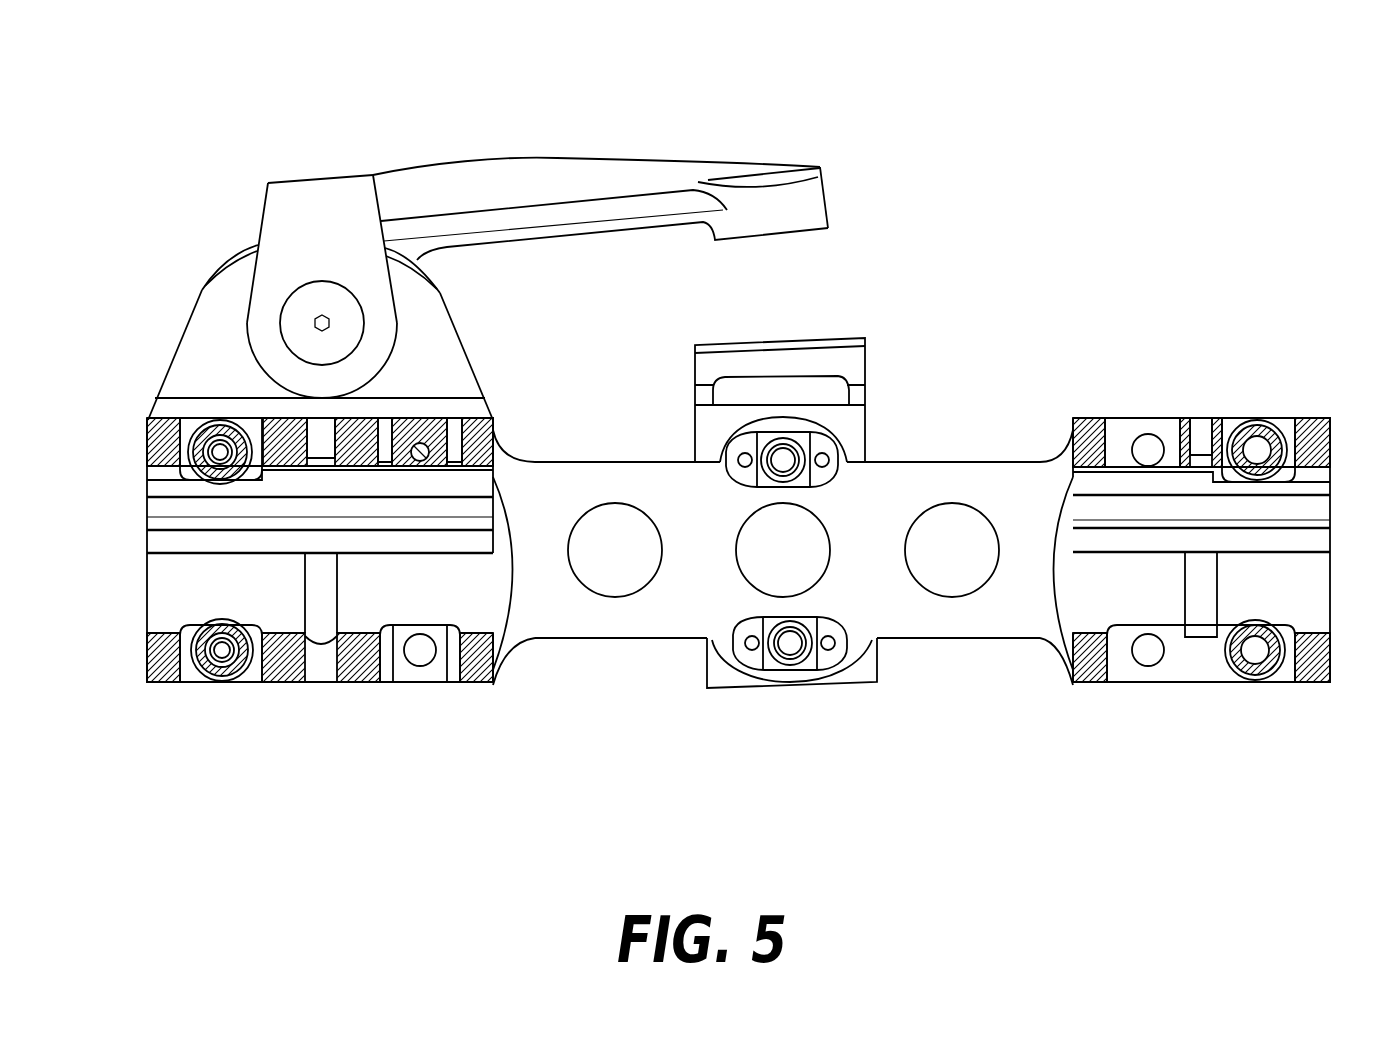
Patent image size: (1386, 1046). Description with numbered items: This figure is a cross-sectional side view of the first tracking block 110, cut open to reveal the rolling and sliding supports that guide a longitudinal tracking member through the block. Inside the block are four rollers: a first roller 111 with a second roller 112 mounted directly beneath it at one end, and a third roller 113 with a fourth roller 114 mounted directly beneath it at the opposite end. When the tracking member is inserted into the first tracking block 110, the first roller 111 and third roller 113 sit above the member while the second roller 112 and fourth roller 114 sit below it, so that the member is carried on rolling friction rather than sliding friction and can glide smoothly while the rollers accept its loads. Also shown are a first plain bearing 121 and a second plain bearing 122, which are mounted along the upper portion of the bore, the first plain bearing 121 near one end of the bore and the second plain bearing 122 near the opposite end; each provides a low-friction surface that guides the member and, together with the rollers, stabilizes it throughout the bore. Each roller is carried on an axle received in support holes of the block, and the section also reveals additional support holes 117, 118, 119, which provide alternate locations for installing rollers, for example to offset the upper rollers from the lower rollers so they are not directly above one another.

The first tracking block 110 is at (345, 118).
The first roller 111 is at (212, 421).
The second roller 112 is at (227, 678).
The third roller 113 is at (1252, 433).
The fourth roller 114 is at (1252, 670).
The support hole 117 is at (417, 653).
The support hole 118 is at (1147, 448).
The support hole 119 is at (1147, 655).
The first plain bearing 121 is at (478, 503).
The second plain bearing 122 is at (1127, 468).